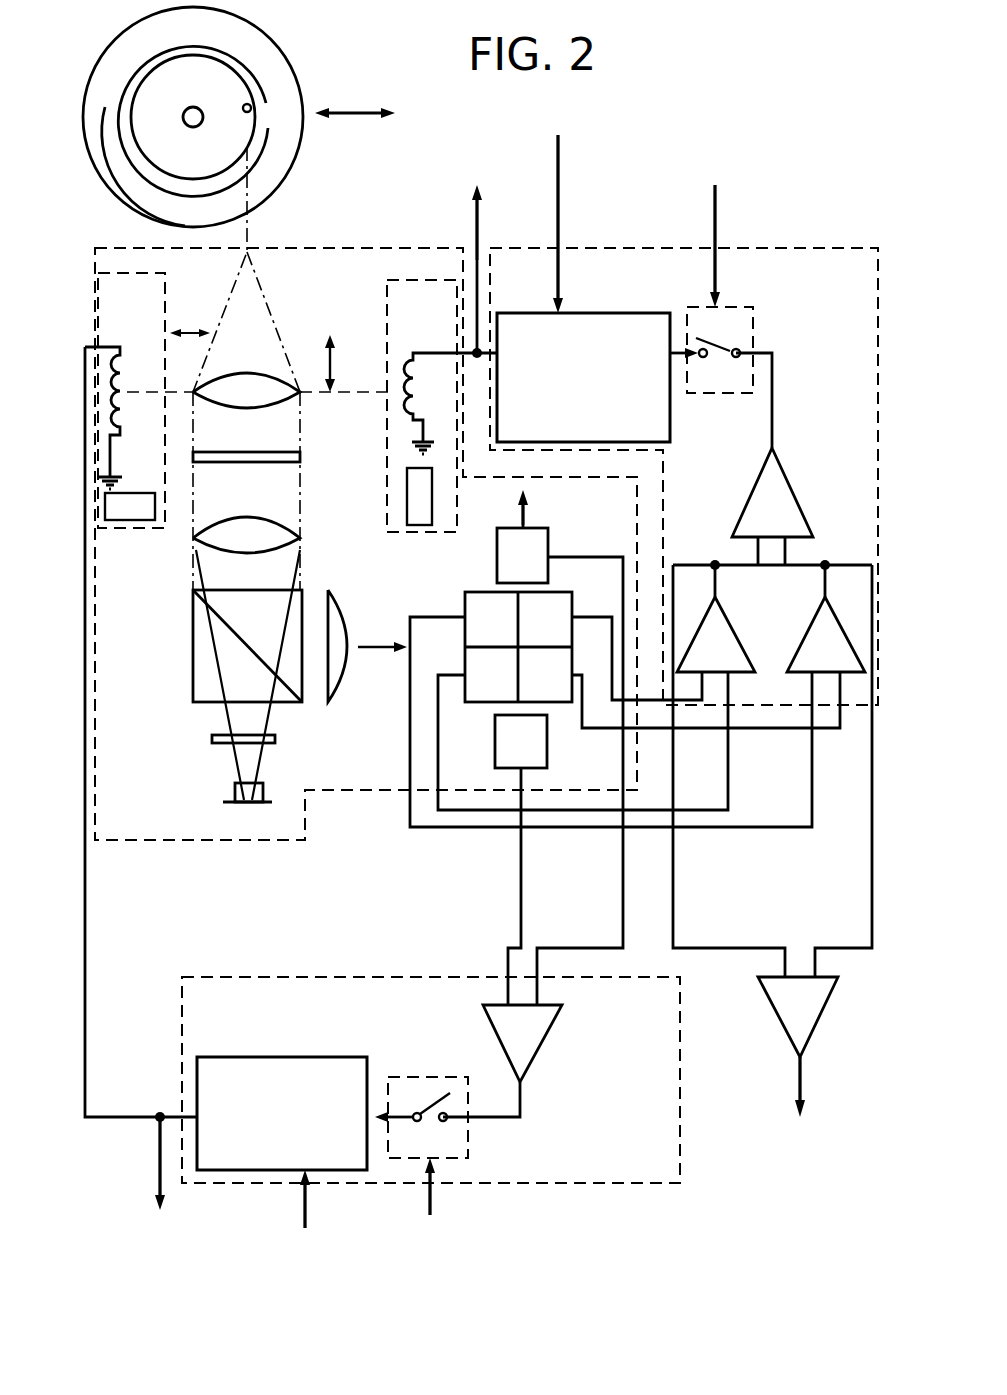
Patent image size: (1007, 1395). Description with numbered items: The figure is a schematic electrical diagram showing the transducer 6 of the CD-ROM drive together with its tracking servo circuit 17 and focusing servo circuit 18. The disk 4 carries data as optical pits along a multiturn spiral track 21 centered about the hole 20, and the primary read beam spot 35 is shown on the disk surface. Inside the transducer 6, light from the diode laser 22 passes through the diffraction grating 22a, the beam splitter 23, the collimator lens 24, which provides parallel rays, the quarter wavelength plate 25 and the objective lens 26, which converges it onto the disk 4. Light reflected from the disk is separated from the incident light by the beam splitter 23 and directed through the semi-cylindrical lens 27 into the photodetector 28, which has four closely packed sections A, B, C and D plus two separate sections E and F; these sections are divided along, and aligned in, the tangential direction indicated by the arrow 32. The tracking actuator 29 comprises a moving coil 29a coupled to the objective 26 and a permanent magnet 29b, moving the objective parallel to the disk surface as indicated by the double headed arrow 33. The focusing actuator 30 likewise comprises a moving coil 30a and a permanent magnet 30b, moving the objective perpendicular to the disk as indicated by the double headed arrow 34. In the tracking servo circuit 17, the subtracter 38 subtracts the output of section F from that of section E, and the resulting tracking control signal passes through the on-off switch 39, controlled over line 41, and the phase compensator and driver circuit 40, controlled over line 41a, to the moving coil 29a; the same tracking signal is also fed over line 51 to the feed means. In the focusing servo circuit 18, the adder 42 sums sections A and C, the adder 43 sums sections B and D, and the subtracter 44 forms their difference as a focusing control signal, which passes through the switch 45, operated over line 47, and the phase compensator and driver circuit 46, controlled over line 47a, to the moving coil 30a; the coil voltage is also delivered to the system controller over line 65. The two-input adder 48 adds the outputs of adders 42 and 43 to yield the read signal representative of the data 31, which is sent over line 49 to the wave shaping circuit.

The disk 4 is at (315, 62).
The hole 20 is at (200, 110).
The spiral track 21 is at (267, 100).
The primary beam spot 35 is at (253, 112).
The transducer 6 is at (378, 245).
The tracking actuator 29 is at (168, 273).
The moving coil 29a is at (122, 340).
The permanent magnet 29b is at (140, 492).
The double headed arrow 33 is at (188, 332).
The double headed arrow 34 is at (327, 347).
The objective lens 26 is at (300, 393).
The quarter wavelength plate 25 is at (300, 455).
The collimator lens 24 is at (300, 525).
The beam splitter 23 is at (193, 683).
The semi-cylindrical lens 27 is at (345, 605).
The data 31 is at (370, 650).
The diffraction grating 22a is at (275, 738).
The diode laser 22 is at (235, 792).
The focusing actuator 30 is at (385, 300).
The moving coil 30a is at (405, 352).
The permanent magnet 30b is at (420, 530).
The line 65 is at (480, 242).
The line 47a is at (560, 165).
The line 47 is at (713, 225).
The phase compensator and driver circuit 46 is at (535, 312).
The focusing servo circuit 18 is at (765, 245).
The switch 45 is at (735, 306).
The subtracter 44 is at (800, 500).
The adder 42 is at (735, 610).
The adder 43 is at (805, 620).
The photodetector 28 is at (568, 538).
The arrow 32 is at (520, 512).
The subtracter 38 is at (548, 1035).
The two-input adder 48 is at (770, 1020).
The line 49 is at (798, 1072).
The tracking servo circuit 17 is at (255, 975).
The phase compensator and driver circuit 40 is at (292, 1055).
The on-off switch 39 is at (420, 1075).
The line 41a is at (307, 1195).
The line 41 is at (433, 1190).
The line 51 is at (157, 1145).